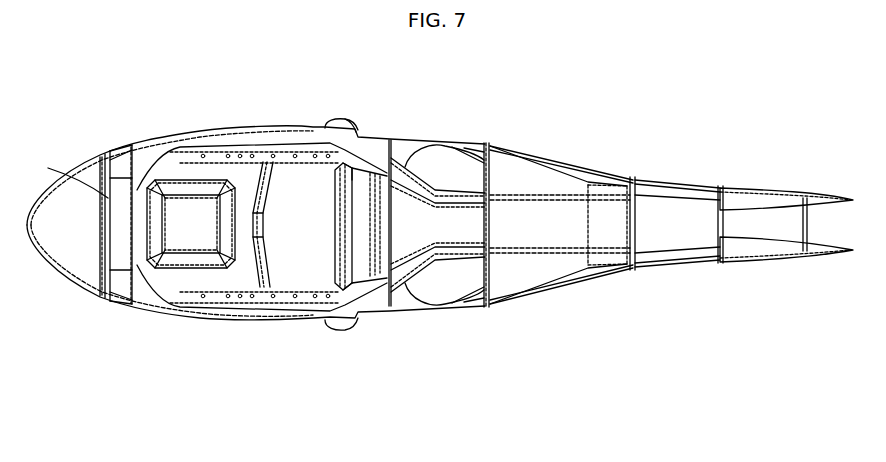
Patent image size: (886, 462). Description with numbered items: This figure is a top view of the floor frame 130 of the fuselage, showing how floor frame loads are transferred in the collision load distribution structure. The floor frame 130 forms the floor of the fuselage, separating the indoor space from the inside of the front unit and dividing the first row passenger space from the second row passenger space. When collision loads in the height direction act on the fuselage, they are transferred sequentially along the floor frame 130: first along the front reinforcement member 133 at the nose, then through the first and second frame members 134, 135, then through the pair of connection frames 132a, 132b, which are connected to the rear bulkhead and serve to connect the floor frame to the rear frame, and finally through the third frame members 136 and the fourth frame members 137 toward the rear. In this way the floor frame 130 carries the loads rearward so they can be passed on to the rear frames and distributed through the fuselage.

The floor frame 130 is at (202, 320).
The connection frame 132a is at (403, 162).
The connection frame 132b is at (412, 268).
The front reinforcement member 133 is at (108, 198).
The first frame member 134 is at (125, 178).
The second frame member 135 is at (214, 143).
The third frame member 136 is at (540, 197).
The fourth frame member 137 is at (749, 207).